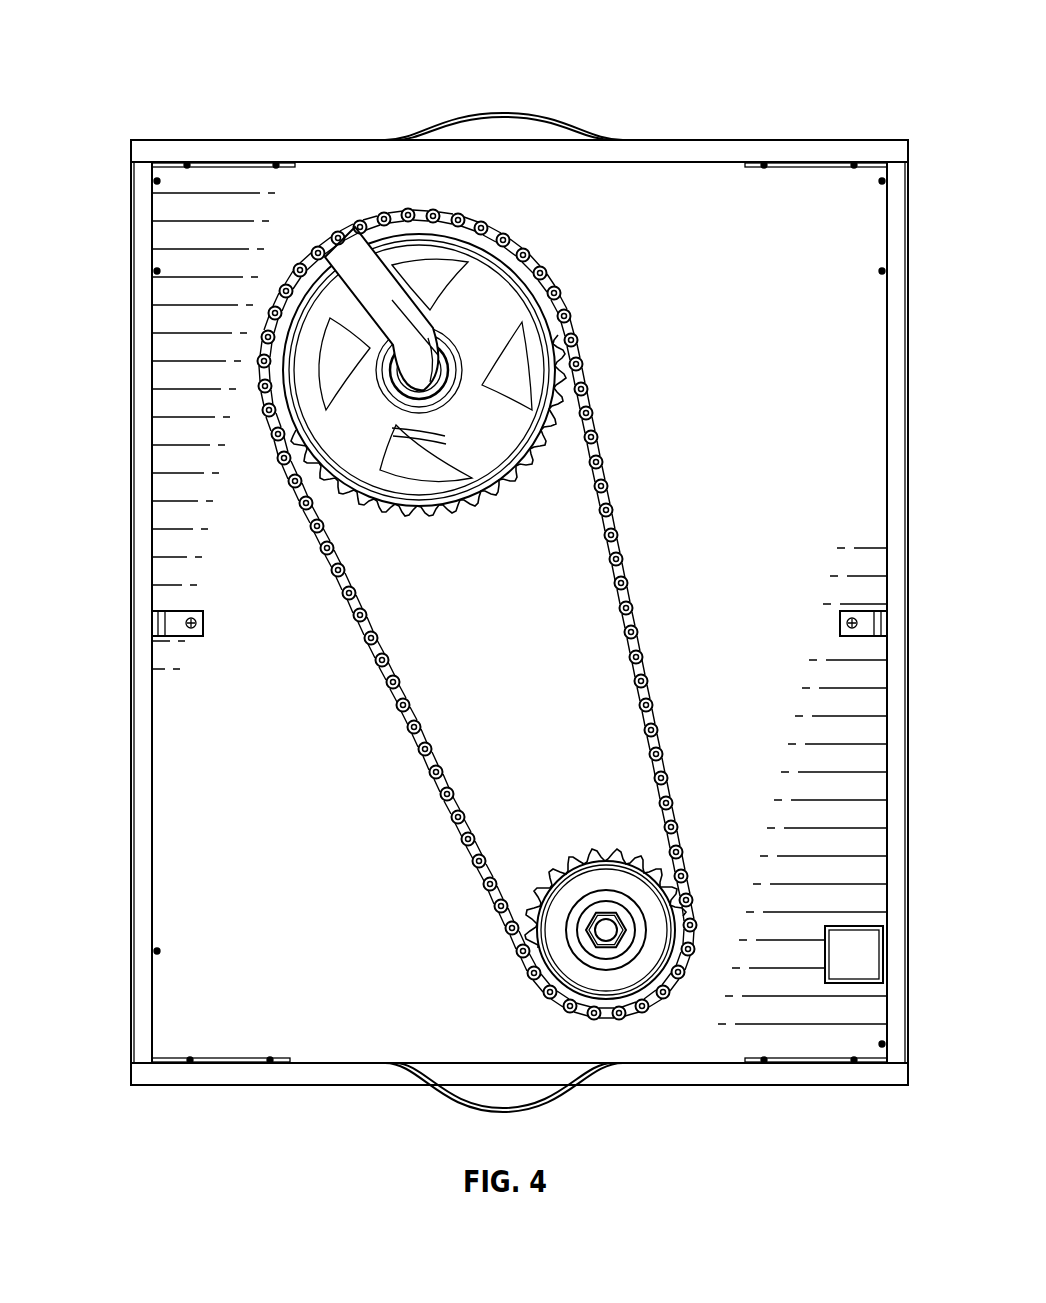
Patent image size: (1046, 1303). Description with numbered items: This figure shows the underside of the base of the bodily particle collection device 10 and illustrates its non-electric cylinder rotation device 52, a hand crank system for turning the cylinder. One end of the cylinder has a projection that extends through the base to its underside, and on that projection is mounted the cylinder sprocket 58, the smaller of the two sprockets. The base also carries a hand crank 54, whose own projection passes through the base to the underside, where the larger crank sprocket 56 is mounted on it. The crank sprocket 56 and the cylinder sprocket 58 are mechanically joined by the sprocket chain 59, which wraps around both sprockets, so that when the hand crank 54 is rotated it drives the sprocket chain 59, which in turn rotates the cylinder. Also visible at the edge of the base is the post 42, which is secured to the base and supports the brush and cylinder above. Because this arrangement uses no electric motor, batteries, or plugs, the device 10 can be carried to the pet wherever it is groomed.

The bodily particle collection device 10 is at (206, 46).
The post 42 is at (848, 925).
The cylinder rotation device 52 is at (256, 282).
The hand crank 54 is at (368, 240).
The crank sprocket 56 is at (500, 329).
The cylinder sprocket 58 is at (472, 861).
The sprocket chain 59 is at (634, 612).